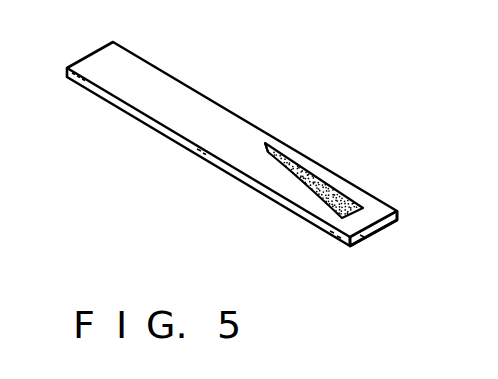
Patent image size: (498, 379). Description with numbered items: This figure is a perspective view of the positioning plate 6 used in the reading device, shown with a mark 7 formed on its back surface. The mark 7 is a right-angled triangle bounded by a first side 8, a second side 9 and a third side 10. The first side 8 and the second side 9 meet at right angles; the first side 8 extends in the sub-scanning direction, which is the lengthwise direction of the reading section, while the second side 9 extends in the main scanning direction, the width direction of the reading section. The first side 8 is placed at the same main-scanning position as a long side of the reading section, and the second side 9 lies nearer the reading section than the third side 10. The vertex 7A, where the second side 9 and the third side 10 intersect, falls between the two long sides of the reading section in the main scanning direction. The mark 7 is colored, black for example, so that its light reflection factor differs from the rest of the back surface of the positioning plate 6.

The positioning plate 6 is at (187, 98).
The mark 7 is at (309, 175).
The vertex 7A is at (266, 142).
The first side 8 is at (352, 217).
The second side 9 is at (346, 188).
The third side 10 is at (323, 199).